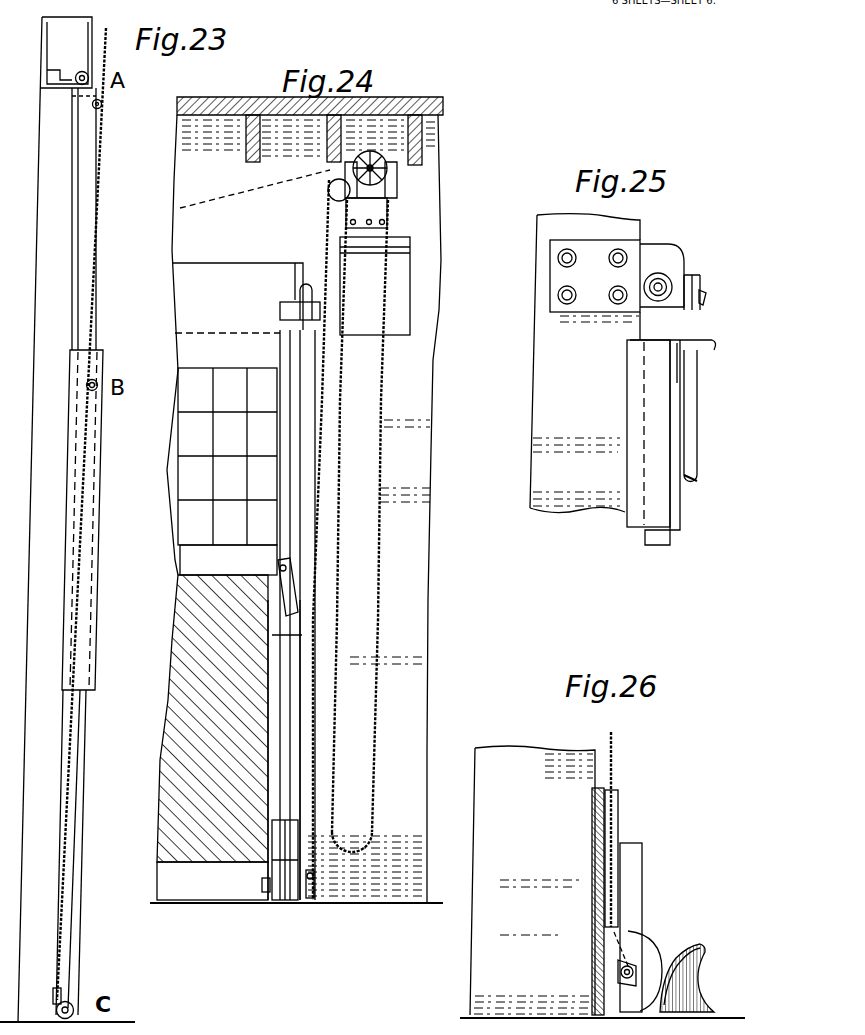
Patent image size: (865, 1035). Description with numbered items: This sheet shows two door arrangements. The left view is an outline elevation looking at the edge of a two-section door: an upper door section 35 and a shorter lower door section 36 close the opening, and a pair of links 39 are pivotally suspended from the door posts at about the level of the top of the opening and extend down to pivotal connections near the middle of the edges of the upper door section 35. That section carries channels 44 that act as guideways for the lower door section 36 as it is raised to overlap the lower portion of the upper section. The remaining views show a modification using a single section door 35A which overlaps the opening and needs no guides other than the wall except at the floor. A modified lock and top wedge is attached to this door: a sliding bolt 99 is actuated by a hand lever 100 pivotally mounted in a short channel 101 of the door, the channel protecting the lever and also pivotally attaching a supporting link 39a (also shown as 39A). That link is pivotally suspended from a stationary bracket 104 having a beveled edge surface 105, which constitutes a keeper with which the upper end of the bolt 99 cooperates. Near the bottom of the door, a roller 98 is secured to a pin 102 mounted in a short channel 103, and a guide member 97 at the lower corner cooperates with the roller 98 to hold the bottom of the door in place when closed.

In FIG. 23, the upper door section 35 is at (80, 322).
In FIG. 24, the single section door 35A is at (195, 560).
In FIG. 25, the single section door 35A is at (635, 426).
In FIG. 26, the single section door 35A is at (648, 834).
In FIG. 23, the lower door section 36 is at (75, 896).
In FIG. 23, the links 39 is at (84, 190).
In FIG. 24, the supporting link 39a is at (310, 456).
In FIG. 25, the supporting link 39A is at (681, 541).
In FIG. 26, the supporting link 39A is at (611, 829).
In FIG. 23, the channels 44 is at (87, 517).
In FIG. 26, the guide members 97 is at (702, 944).
In FIG. 24, the rollers 98 is at (301, 905).
In FIG. 26, the rollers 98 is at (643, 950).
In FIG. 24, the sliding bolt 99 is at (285, 428).
In FIG. 25, the sliding bolt 99 is at (692, 393).
In FIG. 24, the hand lever 100 is at (280, 600).
In FIG. 24, the short channel 101 is at (290, 640).
In FIG. 24, the pin 102 is at (280, 885).
In FIG. 26, the pin 102 is at (616, 973).
In FIG. 24, the short channel 103 is at (278, 830).
In FIG. 24, the stationary bracket 104 is at (316, 290).
In FIG. 25, the stationary bracket 104 is at (658, 256).
In FIG. 25, the beveled edge surface 105 is at (702, 294).